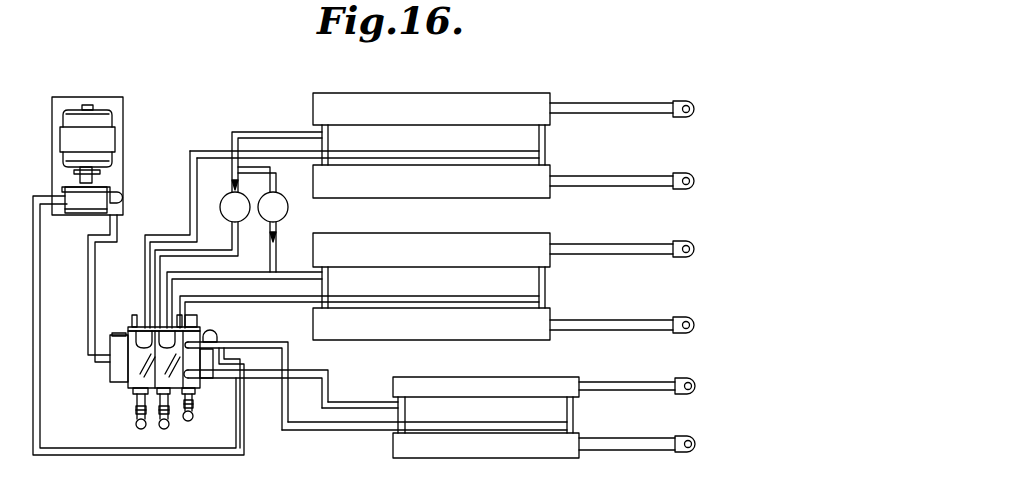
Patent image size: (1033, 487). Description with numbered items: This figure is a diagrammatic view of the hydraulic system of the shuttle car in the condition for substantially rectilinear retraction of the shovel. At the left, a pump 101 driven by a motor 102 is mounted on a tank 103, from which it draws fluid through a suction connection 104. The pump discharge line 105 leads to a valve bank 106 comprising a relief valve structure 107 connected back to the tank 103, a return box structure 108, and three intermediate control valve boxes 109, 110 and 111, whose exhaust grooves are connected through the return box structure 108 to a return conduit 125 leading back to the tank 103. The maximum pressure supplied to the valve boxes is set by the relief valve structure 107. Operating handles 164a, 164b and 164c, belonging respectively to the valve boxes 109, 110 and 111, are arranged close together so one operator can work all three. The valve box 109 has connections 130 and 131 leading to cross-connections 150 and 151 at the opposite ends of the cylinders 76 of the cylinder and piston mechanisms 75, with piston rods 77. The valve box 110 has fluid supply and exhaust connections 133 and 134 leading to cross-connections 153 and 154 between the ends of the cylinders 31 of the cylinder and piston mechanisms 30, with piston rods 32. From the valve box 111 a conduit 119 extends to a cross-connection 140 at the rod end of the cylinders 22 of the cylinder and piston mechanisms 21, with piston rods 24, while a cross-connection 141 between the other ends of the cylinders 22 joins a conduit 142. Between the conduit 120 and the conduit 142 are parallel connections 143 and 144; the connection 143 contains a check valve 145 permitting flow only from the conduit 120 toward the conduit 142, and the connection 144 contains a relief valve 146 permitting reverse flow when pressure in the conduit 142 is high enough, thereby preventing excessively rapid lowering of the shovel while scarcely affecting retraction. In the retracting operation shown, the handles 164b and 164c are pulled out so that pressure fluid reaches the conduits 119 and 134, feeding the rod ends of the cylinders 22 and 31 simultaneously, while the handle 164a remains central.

The tank 103 is at (125, 107).
The motor 102 is at (115, 135).
The pump 101 is at (100, 197).
The suction connection 104 is at (122, 198).
The pump discharge line 105 is at (42, 278).
The return conduit 125 is at (95, 281).
The conduit 119 is at (152, 236).
The parallel connection 143 is at (233, 176).
The conduit 142 is at (268, 135).
The parallel connection 144 is at (274, 176).
The check valve 145 is at (230, 211).
The relief valve 146 is at (288, 208).
The conduit 120 is at (262, 254).
The fluid supply and exhaust connection 133 is at (285, 277).
The fluid supply and exhaust connection 134 is at (312, 297).
The valve bank 106 is at (199, 327).
The relief valve structure 107 is at (216, 339).
The return box structure 108 is at (122, 367).
The control valve box 111 is at (140, 380).
The control valve box 109 is at (193, 382).
The control valve box 110 is at (167, 388).
The handle 164c is at (138, 428).
The handle 164b is at (168, 427).
The handle 164a is at (193, 419).
The connection 130 is at (311, 373).
The connection 131 is at (365, 426).
The cylinder and piston mechanisms 21 is at (480, 93).
The cylinders 22 is at (480, 117).
The cross-connection 141 is at (330, 146).
The cross-connection 140 is at (546, 142).
The piston rods 24 is at (628, 108).
The cylinder and piston mechanisms 30 is at (473, 233).
The cylinders 31 is at (477, 258).
The cross-connection 153 is at (329, 281).
The cross-connection 154 is at (546, 284).
The piston rods 32 is at (632, 258).
The cylinder and piston mechanisms 75 is at (520, 375).
The cylinders 76 is at (533, 387).
The cross-connection 150 is at (405, 417).
The cross-connection 151 is at (573, 413).
The piston rods 77 is at (638, 385).